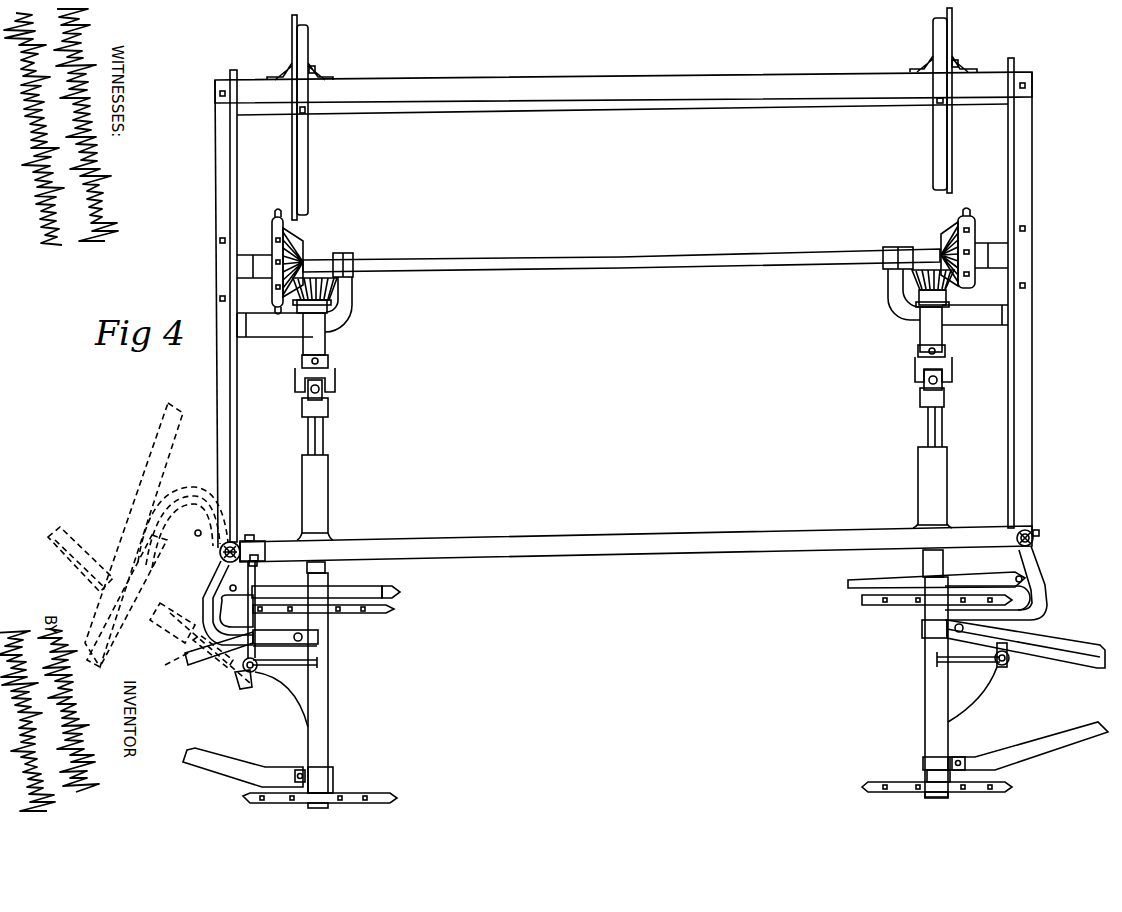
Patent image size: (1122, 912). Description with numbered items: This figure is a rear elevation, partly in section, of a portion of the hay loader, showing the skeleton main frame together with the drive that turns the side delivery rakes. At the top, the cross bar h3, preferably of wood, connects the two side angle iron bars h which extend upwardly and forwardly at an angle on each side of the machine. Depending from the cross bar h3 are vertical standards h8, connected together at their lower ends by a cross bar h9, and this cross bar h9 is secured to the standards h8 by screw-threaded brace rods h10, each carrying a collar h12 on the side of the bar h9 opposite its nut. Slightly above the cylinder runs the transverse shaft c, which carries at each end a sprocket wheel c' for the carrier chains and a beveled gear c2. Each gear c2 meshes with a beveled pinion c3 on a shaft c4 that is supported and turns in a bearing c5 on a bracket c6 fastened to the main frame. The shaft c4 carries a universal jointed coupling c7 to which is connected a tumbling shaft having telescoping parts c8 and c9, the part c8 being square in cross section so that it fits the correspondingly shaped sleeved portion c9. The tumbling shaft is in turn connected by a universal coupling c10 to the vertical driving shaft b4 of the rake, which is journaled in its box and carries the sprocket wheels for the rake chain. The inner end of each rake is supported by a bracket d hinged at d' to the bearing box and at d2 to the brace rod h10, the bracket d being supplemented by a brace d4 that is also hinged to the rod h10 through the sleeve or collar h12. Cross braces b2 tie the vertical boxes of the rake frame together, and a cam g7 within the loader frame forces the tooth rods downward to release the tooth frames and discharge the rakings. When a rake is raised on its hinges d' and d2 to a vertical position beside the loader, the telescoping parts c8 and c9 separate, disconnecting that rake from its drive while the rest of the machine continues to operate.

The angle iron bars h is at (302, 52).
The cross bar h3 is at (623, 93).
The vertical standards h8 is at (224, 190).
The cross bar h9 is at (636, 544).
The brace rods h10 is at (221, 541).
The collar h12 is at (256, 548).
The transverse shaft c is at (622, 256).
The sprocket wheel c' is at (623, 245).
The beveled gear c2 is at (305, 244).
The beveled pinion c3 is at (336, 283).
The shaft c4 is at (945, 296).
The bearing c5 is at (332, 333).
The bracket c6 is at (280, 338).
The universal jointed coupling c7 is at (336, 391).
The telescoping part of tumbling shaft c8 is at (325, 446).
The sleeved portion of tumbling shaft c9 is at (328, 499).
The universal coupling c10 is at (335, 538).
The cam g7 is at (402, 590).
The vertical shaft b4 is at (330, 616).
The bracket d is at (620, 595).
The hinge d' is at (626, 673).
The hinge d2 is at (219, 551).
The brace d4 is at (240, 672).
The cross braces b2 is at (186, 666).